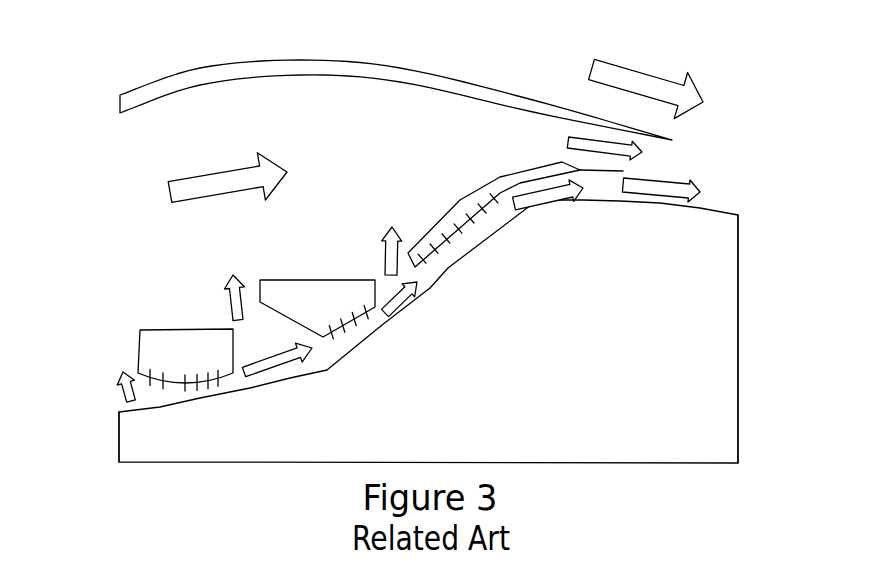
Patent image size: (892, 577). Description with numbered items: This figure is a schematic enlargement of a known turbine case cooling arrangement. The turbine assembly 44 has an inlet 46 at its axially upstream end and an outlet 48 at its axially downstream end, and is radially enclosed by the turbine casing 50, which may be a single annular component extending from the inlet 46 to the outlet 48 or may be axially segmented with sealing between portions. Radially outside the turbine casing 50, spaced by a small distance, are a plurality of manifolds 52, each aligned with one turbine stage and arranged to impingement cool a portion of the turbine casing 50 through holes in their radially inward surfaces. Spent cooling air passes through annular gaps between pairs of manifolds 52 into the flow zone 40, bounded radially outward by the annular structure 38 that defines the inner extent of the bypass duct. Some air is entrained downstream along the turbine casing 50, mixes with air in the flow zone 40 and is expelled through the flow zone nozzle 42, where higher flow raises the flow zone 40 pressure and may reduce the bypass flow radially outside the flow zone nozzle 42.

The annular structure 38 is at (433, 72).
The flow zone 40 is at (287, 150).
The flow zone nozzle 42 is at (700, 158).
The turbine assembly 44 is at (505, 376).
The inlet 46 is at (115, 438).
The outlet 48 is at (738, 362).
The turbine casing 50 is at (577, 203).
The manifold 52 is at (207, 328).